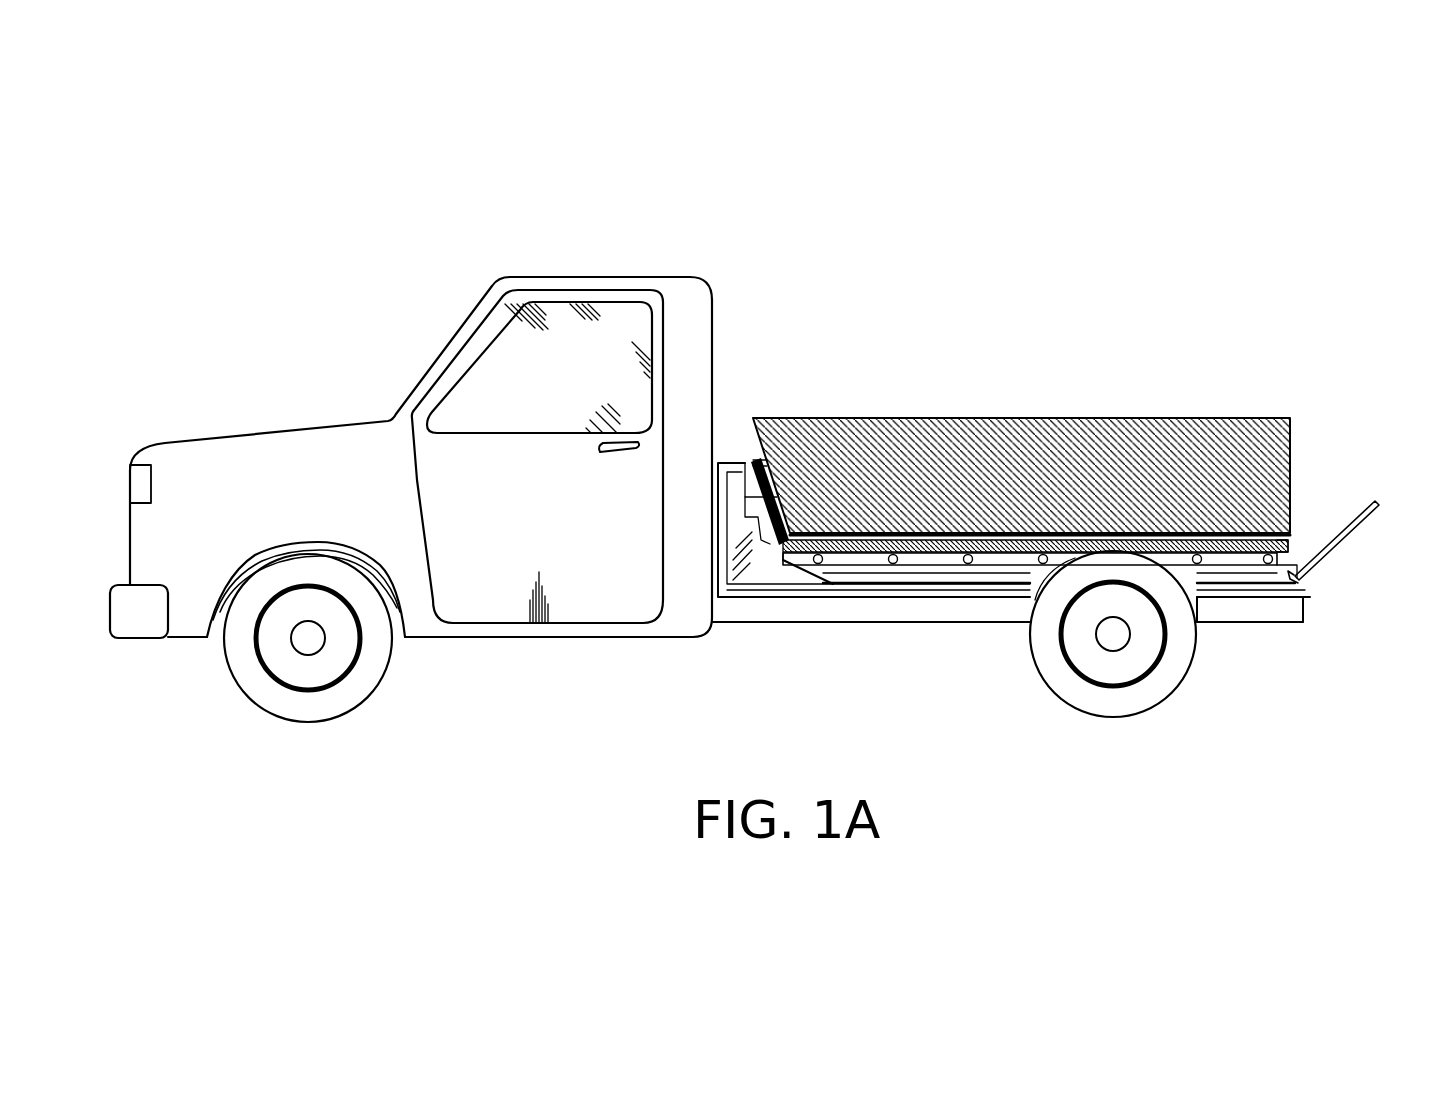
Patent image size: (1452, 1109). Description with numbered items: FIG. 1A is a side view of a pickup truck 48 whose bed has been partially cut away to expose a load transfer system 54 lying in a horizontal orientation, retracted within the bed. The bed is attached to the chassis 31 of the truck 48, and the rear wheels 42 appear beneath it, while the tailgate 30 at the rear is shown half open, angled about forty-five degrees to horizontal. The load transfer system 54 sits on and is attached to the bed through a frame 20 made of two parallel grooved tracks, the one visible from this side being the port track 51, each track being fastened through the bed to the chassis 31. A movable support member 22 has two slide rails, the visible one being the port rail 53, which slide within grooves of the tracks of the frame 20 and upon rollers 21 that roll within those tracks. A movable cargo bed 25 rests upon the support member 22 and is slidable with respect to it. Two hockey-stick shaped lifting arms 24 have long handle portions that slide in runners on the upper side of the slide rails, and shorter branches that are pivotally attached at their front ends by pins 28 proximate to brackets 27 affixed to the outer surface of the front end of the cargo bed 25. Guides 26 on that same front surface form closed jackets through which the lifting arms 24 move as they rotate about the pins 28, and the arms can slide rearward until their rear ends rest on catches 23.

The pickup truck 48 is at (678, 292).
The load transfer system 54 is at (1101, 298).
The cargo bed 25 is at (1213, 452).
The guides 26 is at (789, 512).
The pins 28 is at (754, 465).
The brackets 27 is at (748, 462).
The lifting arms 24 is at (866, 538).
The rollers 21 is at (950, 553).
The chassis 31 is at (978, 608).
The wheels 42 is at (1135, 655).
The catches 23 is at (1090, 557).
The movable support member 22 is at (1349, 465).
The port rail 53 is at (1290, 548).
The frame 20 is at (1349, 497).
The port track 51 is at (1296, 572).
The tailgate 30 is at (1372, 510).